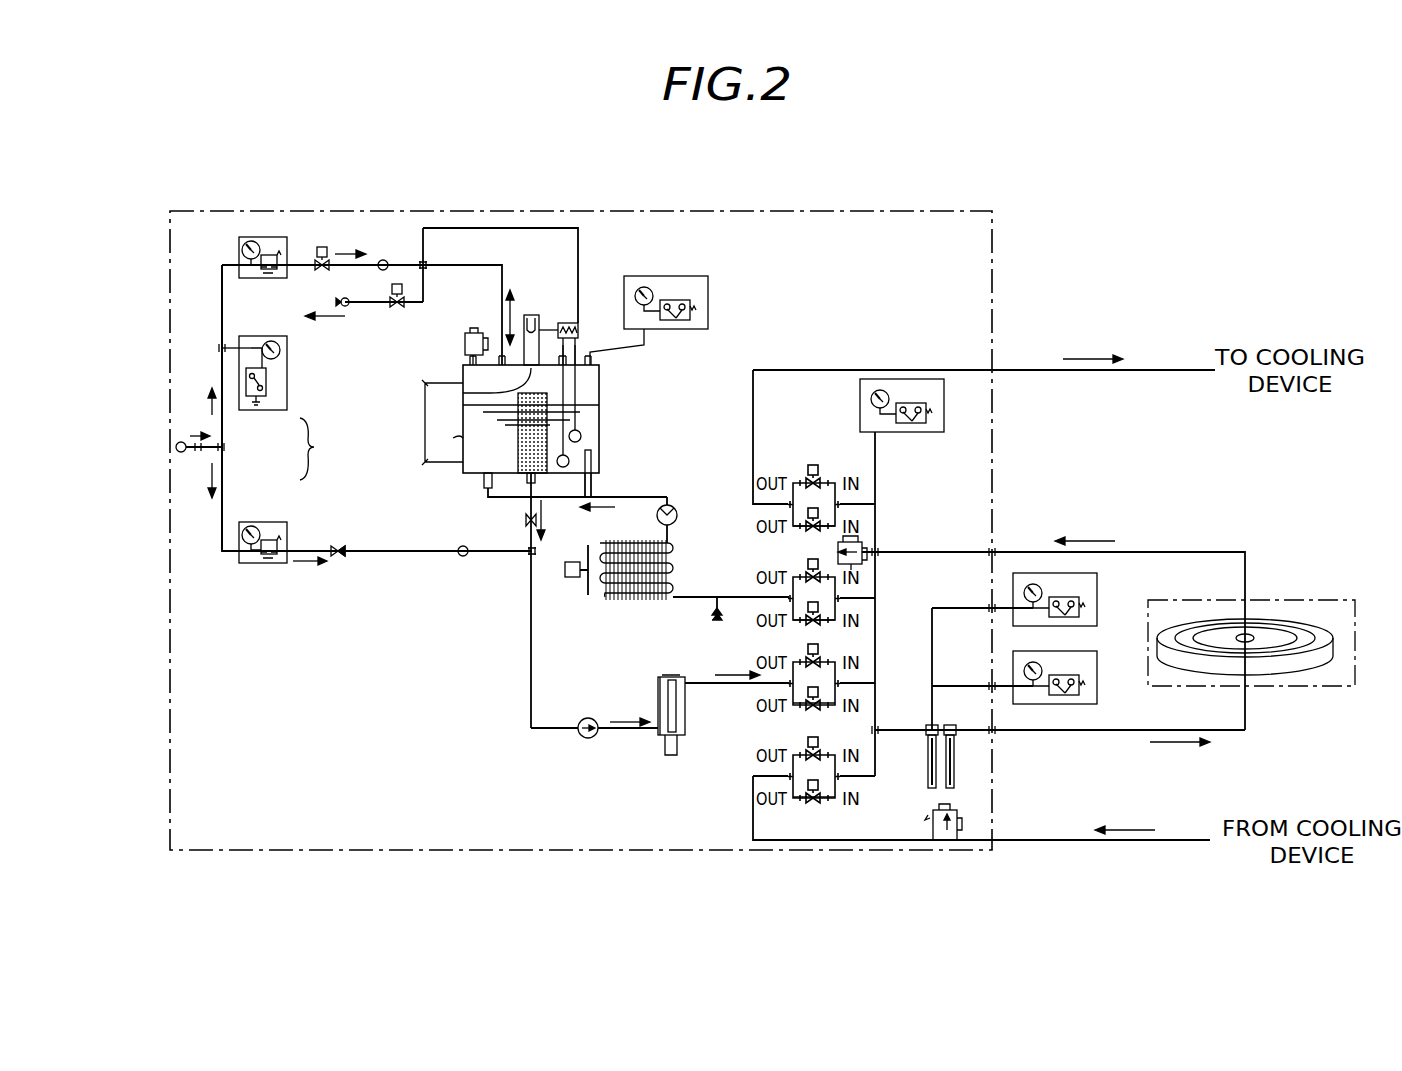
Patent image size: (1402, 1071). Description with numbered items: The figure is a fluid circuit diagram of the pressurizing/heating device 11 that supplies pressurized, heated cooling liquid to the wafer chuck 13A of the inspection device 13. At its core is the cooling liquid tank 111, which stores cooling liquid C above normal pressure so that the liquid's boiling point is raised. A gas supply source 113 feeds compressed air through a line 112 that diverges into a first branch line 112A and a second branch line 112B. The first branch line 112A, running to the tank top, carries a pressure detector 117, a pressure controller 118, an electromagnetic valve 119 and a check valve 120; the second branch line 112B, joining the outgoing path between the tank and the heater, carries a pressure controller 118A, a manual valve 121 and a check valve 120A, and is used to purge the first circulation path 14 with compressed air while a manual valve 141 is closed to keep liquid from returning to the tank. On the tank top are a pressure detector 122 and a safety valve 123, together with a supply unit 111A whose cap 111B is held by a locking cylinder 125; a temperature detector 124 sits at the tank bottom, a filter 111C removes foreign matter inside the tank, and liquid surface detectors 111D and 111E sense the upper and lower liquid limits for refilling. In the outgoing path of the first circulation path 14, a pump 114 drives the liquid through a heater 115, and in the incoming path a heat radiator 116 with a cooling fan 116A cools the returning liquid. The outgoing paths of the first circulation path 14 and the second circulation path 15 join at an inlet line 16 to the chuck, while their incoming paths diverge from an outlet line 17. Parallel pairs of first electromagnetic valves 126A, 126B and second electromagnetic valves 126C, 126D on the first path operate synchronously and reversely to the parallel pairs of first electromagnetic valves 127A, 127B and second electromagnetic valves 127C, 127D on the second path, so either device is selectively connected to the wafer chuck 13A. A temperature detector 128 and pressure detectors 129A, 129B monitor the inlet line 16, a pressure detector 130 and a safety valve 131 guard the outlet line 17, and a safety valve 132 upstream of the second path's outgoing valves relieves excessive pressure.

The pressurizing/heating device 11 is at (708, 211).
The inspection device 13 is at (1310, 600).
The wafer chuck 13A is at (1298, 668).
The first circulation path 14 is at (672, 507).
The second circulation path 15 is at (1013, 370).
The inlet line 16 is at (1243, 732).
The outlet line 17 is at (1208, 553).
The cooling liquid tank 111 is at (600, 390).
The supply unit 111A is at (463, 393).
The cap 111B is at (530, 315).
The filter 111C is at (488, 485).
The liquid surface detector 111D is at (582, 422).
The liquid surface detector 111E is at (592, 453).
The line 112 is at (284, 408).
The first branch line 112A is at (222, 433).
The second branch line 112B is at (222, 466).
The gas supply source 113 is at (181, 442).
The pump 114 is at (588, 739).
The heater 115 is at (670, 756).
The heat radiator 116 is at (635, 604).
The cooling fan 116A is at (578, 582).
The pressure detector 117 is at (287, 372).
The pressure controller 118 is at (267, 237).
The pressure controller 118A is at (260, 564).
The electromagnetic valve 119 is at (322, 246).
The check valve 120 is at (383, 259).
The check valve 120A is at (463, 557).
The manual valve 121 is at (340, 561).
The pressure detector 122 is at (708, 299).
The safety valve 123 is at (465, 343).
The temperature detector 124 is at (593, 489).
The locking cylinder 125 is at (563, 323).
The first electromagnetic valve 126A is at (826, 645).
The first electromagnetic valve 126B is at (813, 706).
The second electromagnetic valve 126C is at (806, 570).
The second electromagnetic valve 126D is at (810, 622).
The first electromagnetic valve 127A is at (826, 740).
The first electromagnetic valve 127B is at (813, 801).
The second electromagnetic valve 127C is at (813, 466).
The second electromagnetic valve 127D is at (808, 513).
The temperature detector 128 is at (955, 758).
The pressure detector 129A is at (1097, 583).
The pressure detector 129B is at (1097, 698).
The pressure detector 130 is at (912, 432).
The safety valve 131 is at (862, 550).
The safety valve 132 is at (938, 842).
The manual valve 141 is at (526, 520).